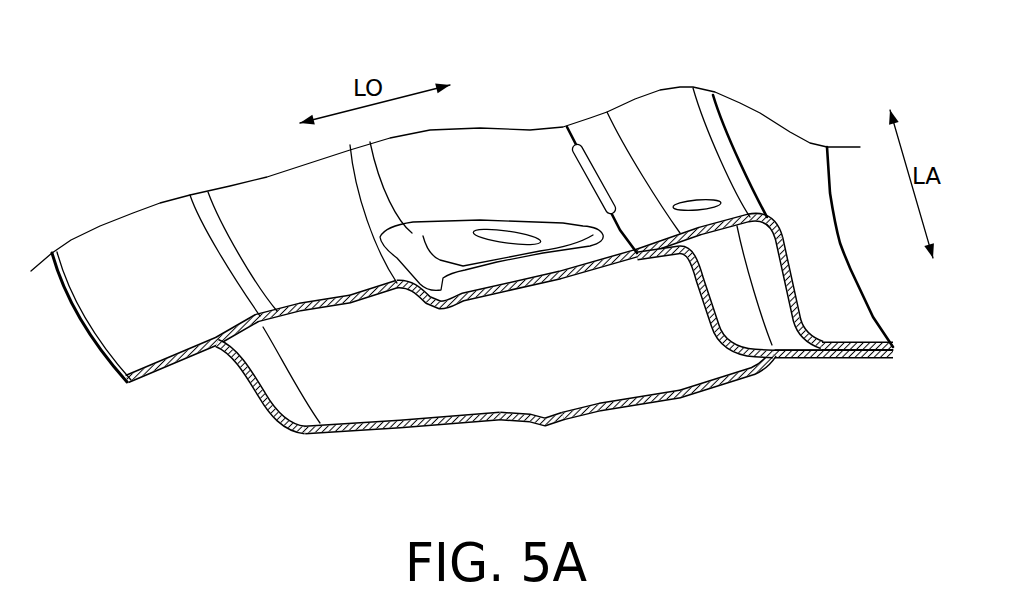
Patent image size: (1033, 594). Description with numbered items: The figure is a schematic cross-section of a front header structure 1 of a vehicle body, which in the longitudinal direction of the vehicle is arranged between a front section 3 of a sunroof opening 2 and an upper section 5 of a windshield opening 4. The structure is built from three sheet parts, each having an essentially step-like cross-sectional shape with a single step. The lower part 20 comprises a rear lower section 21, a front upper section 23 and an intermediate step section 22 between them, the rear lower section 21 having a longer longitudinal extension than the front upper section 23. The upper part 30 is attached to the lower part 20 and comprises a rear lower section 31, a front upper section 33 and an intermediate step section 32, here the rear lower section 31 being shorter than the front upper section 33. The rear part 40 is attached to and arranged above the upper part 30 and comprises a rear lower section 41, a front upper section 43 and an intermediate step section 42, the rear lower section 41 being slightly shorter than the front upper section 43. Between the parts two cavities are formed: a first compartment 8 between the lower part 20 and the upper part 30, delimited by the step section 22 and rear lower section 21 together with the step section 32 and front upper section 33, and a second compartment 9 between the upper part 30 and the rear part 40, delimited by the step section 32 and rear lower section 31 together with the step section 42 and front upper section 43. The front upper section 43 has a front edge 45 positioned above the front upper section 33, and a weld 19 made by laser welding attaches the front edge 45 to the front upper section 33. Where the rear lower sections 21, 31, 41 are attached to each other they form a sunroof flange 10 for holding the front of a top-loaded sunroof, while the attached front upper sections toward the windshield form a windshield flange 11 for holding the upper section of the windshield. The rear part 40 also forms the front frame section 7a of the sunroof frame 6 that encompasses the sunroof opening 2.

The front header structure 1 is at (160, 139).
The sunroof opening 2 is at (919, 106).
The front section of the sunroof opening 3 is at (858, 283).
The windshield opening 4 is at (90, 381).
The upper section of the windshield opening 5 is at (94, 340).
The sunroof frame 6 is at (803, 257).
The front frame section 7a is at (790, 210).
The first compartment 8 is at (535, 363).
The second compartment 9 is at (773, 357).
The sunroof flange 10 is at (779, 171).
The windshield flange 11 is at (144, 242).
The weld 19 is at (578, 179).
The lower part 20 is at (441, 372).
The rear lower section of the lower part 21 is at (627, 412).
The step section of the lower part 22 is at (253, 380).
The front upper section of the lower part 23 is at (166, 372).
The upper part 30 is at (278, 206).
The rear lower section of the upper part 31 is at (800, 362).
The step section of the upper part 32 is at (687, 270).
The front upper section of the upper part 33 is at (334, 308).
The rear part 40 is at (661, 128).
The rear lower section of the rear part 41 is at (870, 347).
The step section of the rear part 42 is at (800, 290).
The front upper section of the rear part 43 is at (691, 198).
The front edge 45 is at (569, 130).